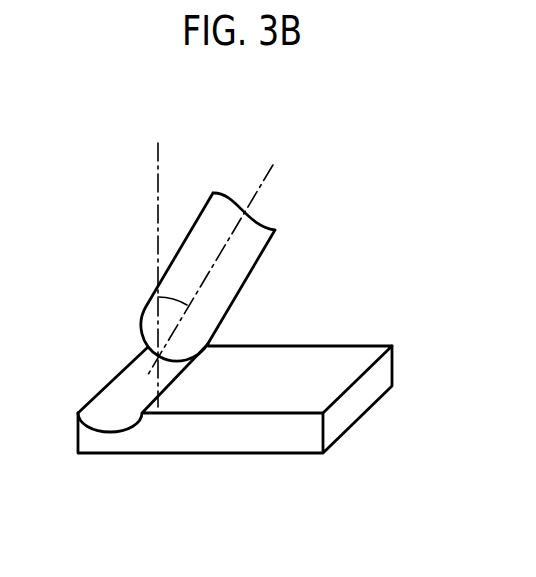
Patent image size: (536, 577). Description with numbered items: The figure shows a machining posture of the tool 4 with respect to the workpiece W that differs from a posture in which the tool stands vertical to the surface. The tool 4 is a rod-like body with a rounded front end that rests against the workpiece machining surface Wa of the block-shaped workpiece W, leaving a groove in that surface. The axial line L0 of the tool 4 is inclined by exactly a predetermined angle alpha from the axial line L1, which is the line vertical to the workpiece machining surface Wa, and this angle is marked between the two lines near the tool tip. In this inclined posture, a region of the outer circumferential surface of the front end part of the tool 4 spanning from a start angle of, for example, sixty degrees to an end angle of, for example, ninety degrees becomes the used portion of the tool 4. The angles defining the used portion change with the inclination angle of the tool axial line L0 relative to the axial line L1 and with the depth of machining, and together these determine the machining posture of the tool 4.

The tool 4 is at (253, 267).
The workpiece W is at (252, 453).
The workpiece machining surface Wa is at (337, 355).
The axial line of the tool L0 is at (221, 257).
The axial line vertical to the workpiece machining surface L1 is at (156, 256).